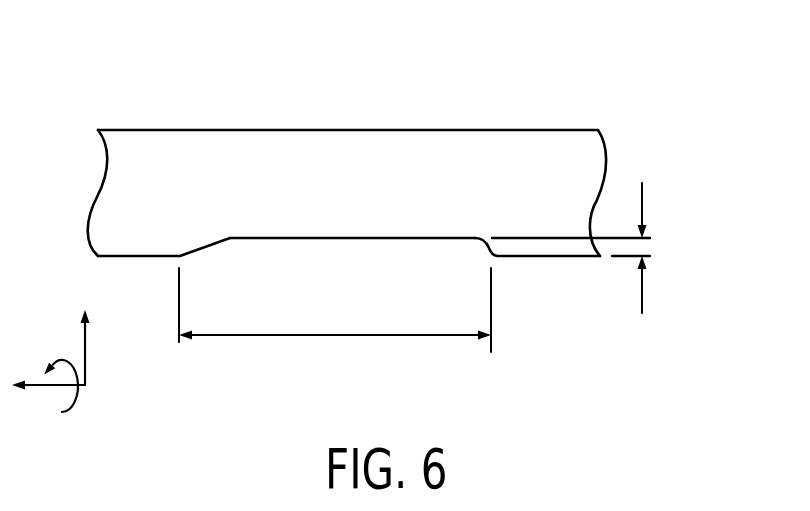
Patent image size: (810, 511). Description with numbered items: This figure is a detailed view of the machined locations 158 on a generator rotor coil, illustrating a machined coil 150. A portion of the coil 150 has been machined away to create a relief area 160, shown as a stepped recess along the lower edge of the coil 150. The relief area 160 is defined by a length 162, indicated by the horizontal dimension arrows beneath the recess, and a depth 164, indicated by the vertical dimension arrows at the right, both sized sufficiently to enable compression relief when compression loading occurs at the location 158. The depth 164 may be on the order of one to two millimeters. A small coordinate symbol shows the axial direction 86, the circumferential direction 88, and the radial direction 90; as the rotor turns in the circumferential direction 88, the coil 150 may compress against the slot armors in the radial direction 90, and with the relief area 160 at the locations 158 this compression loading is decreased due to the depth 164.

The machined locations 158 is at (322, 90).
The machined coil 150 is at (177, 143).
The relief area 160 is at (403, 248).
The length 162 is at (323, 335).
The depth 164 is at (645, 246).
The axial direction 86 is at (45, 387).
The circumferential direction 88 is at (76, 390).
The radial direction 90 is at (85, 355).